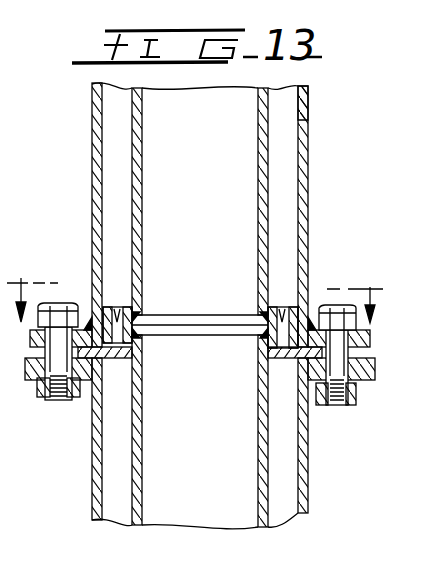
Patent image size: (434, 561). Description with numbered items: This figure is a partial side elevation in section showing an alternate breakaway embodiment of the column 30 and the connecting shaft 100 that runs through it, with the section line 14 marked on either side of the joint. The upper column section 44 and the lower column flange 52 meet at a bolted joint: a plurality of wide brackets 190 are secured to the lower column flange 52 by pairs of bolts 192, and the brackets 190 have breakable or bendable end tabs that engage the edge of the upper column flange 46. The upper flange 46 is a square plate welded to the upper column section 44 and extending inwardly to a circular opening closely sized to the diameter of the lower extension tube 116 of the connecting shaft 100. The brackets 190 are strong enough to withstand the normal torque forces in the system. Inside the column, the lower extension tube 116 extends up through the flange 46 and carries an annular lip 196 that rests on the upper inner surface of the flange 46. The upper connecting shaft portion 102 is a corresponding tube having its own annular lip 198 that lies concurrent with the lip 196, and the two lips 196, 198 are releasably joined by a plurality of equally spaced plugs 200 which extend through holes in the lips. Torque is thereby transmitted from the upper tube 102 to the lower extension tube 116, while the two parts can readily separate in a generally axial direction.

The connecting shaft 100 is at (128, 128).
The column 30 is at (308, 106).
The upper column section 44 is at (308, 158).
The upper connecting shaft portion 102 is at (264, 232).
The annular lip 198 is at (130, 306).
The plug 200 is at (282, 306).
The annular lip 196 is at (260, 337).
The upper column flange 46 is at (108, 358).
The lower column flange 52 is at (364, 353).
The bolt 192 is at (318, 305).
The wide bracket 190 is at (377, 385).
The lower extension tube 116 is at (270, 488).
The section line 14- 14 is at (198, 288).